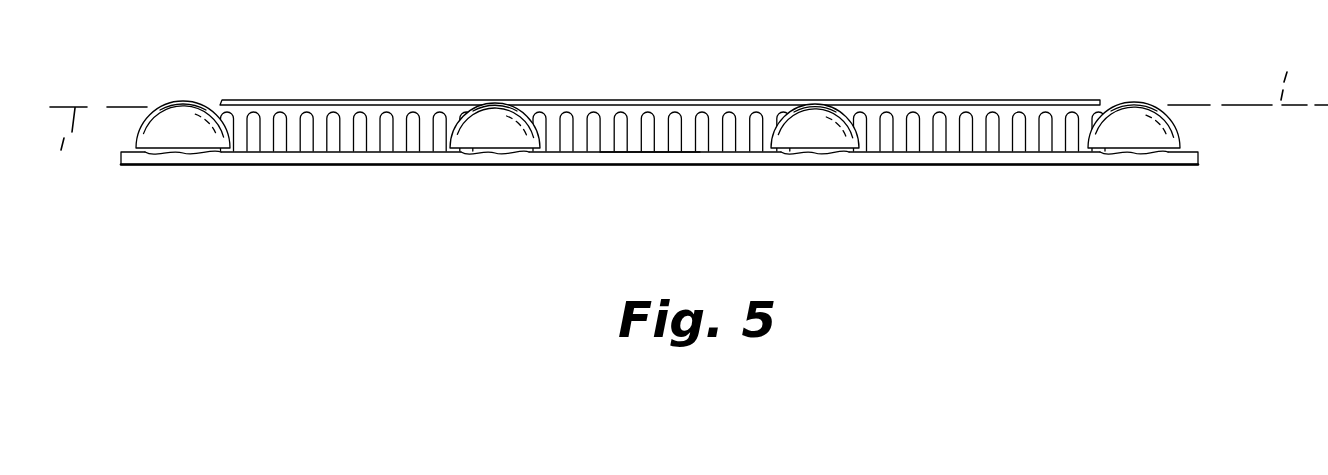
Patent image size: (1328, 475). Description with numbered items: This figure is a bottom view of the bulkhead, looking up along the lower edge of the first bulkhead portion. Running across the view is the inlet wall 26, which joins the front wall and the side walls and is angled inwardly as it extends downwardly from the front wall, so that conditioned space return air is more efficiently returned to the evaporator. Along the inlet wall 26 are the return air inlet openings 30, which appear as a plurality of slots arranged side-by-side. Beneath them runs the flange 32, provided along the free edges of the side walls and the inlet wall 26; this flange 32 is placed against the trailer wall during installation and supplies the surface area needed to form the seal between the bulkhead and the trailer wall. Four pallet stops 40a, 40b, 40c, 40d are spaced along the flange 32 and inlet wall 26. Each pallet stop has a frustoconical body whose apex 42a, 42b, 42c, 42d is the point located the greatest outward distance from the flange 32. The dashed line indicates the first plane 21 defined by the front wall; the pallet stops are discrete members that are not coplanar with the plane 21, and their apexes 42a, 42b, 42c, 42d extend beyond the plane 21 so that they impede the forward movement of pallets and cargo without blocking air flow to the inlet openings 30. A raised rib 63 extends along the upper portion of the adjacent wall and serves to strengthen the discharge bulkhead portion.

The first plane 21 is at (679, 122).
The inlet wall 26 is at (240, 140).
The return air inlet openings 30 is at (348, 120).
The flange 32 is at (643, 153).
The raised rib 63 is at (455, 98).
The pallet stop 40a is at (165, 132).
The pallet stop 40b is at (483, 127).
The pallet stop 40c is at (846, 130).
The pallet stop 40d is at (1160, 132).
The apex 42a is at (182, 103).
The apex 42b is at (502, 102).
The apex 42c is at (822, 102).
The apex 42d is at (1135, 105).